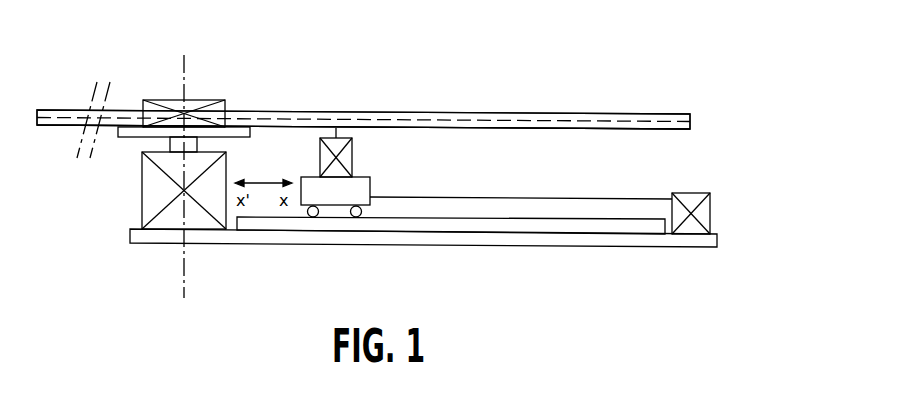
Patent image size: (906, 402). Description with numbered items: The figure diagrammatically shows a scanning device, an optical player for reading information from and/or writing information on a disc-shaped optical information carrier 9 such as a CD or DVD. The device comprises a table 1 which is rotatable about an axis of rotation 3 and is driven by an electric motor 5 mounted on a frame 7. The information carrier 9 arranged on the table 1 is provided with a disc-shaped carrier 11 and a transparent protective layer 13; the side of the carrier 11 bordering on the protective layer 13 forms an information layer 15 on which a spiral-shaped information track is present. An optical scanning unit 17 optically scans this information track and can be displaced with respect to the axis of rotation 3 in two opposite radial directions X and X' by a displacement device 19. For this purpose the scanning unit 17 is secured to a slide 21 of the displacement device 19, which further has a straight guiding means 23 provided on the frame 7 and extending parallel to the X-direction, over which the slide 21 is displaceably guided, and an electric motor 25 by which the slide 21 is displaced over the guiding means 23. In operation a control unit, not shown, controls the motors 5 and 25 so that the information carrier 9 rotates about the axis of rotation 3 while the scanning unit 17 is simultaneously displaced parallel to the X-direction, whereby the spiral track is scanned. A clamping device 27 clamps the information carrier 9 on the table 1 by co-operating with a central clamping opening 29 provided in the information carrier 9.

The table 1 is at (120, 142).
The axis of rotation 3 is at (186, 55).
The electric motor 5 is at (142, 208).
The frame 7 is at (443, 245).
The information carrier 9 is at (559, 79).
The disc-shaped carrier 11 is at (392, 111).
The transparent protective layer 13 is at (498, 129).
The information layer 15 is at (448, 121).
The optical scanning unit 17 is at (353, 163).
The displacement device 19 is at (561, 192).
The slide 21 is at (371, 187).
The straight guiding means 23 is at (533, 227).
The electric motor 25 is at (689, 193).
The clamping device 27 is at (170, 99).
The central clamping opening 29 is at (230, 113).